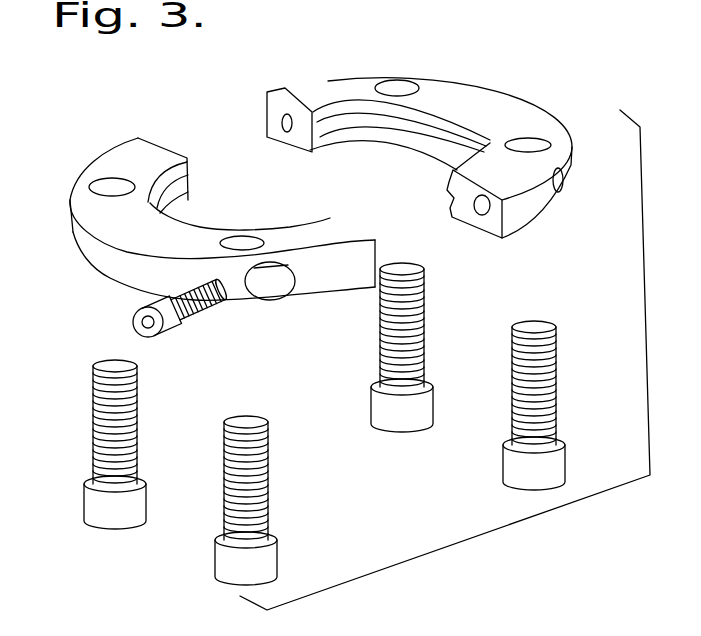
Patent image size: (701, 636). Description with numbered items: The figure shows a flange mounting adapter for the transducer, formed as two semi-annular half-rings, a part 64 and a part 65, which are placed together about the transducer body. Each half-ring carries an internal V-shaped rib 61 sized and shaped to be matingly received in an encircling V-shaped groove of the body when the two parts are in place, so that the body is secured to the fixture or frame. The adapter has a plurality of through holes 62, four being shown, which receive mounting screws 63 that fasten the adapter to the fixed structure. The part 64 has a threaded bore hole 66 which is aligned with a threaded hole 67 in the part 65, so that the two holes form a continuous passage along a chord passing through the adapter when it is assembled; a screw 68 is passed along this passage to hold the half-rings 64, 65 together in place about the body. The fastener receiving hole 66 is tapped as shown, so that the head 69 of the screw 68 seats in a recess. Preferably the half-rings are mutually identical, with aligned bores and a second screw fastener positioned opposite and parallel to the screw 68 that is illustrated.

The internal V-shaped rib 61 is at (190, 182).
The through holes 62 is at (107, 182).
The mounting screws 63 is at (230, 445).
The semi-annular part 64 is at (103, 270).
The semi-annular part 65 is at (530, 98).
The threaded bore hole 66 is at (280, 123).
The threaded hole 67 is at (478, 213).
The screw 68 is at (183, 317).
The head 69 is at (135, 310).